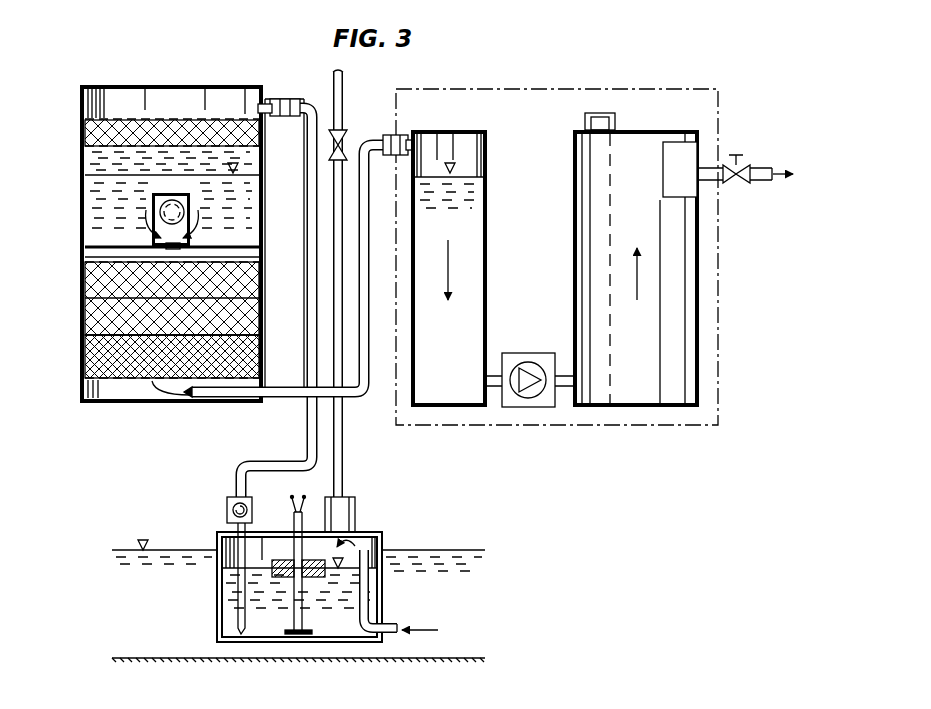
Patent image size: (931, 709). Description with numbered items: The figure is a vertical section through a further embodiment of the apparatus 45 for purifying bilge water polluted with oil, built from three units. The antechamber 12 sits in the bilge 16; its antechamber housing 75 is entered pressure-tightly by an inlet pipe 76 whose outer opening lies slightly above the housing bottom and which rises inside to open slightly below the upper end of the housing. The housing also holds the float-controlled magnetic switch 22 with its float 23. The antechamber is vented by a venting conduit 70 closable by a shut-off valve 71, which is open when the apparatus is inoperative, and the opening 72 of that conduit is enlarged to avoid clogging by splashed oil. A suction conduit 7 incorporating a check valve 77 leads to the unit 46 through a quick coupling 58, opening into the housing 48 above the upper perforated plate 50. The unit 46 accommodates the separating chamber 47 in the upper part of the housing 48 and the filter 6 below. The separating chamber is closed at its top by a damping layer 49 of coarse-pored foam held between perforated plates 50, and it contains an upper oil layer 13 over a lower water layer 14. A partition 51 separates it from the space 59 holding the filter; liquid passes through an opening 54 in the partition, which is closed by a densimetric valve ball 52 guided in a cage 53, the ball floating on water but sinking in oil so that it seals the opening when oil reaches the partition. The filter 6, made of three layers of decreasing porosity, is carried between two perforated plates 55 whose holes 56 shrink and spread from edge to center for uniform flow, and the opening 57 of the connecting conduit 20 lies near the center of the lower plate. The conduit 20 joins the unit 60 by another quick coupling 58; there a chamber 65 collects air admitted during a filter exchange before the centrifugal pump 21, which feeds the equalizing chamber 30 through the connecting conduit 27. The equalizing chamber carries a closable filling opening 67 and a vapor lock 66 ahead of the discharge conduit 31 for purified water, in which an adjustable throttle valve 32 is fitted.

The filter 6 is at (118, 320).
The suction conduit 7 is at (237, 468).
The antechamber 12 is at (213, 590).
The oil layer 13 is at (248, 156).
The water layer 14 is at (258, 178).
The bilge 16 is at (474, 595).
The connecting conduit 20 is at (290, 398).
The centrifugal pump 21 is at (520, 361).
The float-controlled magnetic switch 22 is at (308, 585).
The float 23 is at (285, 559).
The connecting conduit 27 is at (560, 392).
The equalizing chamber 30 is at (642, 338).
The discharge conduit 31 is at (710, 178).
The adjustable throttle valve 32 is at (748, 165).
The apparatus 45 is at (400, 429).
The unit 46 is at (134, 84).
The separating chamber 47 is at (242, 212).
The housing 48 is at (82, 157).
The damping layer 49 is at (96, 135).
The perforated plates 50 is at (121, 118).
The partition 51 is at (243, 245).
The densimetric valve ball 52 is at (164, 211).
The cage 53 is at (152, 237).
The opening 54 is at (170, 248).
The perforated plates 55 is at (116, 265).
The holes 56 is at (245, 270).
The opening 57 is at (199, 397).
The quick coupling 58 is at (286, 99).
The space 59 is at (255, 255).
The unit 60 is at (549, 87).
The chamber 65 is at (460, 236).
The vapor lock 66 is at (661, 172).
The filling opening 67 is at (588, 121).
The venting conduit 70 is at (345, 439).
The shut-off valve 71 is at (343, 140).
The opening 72 is at (355, 508).
The antechamber housing 75 is at (216, 624).
The inlet pipe 76 is at (392, 622).
The check valve 77 is at (226, 508).